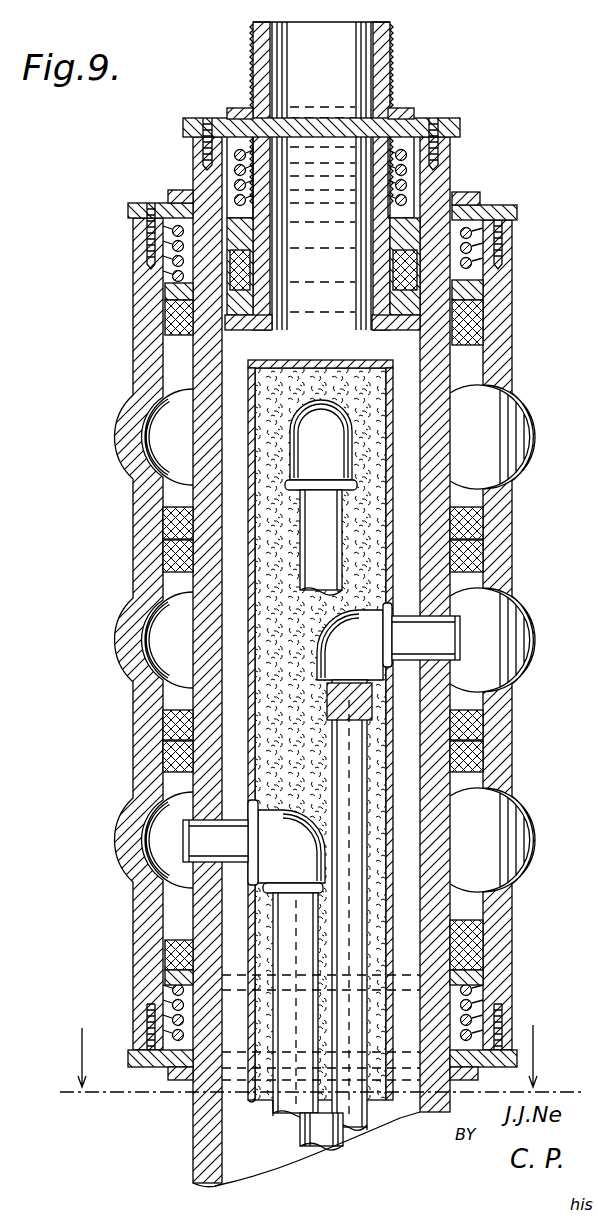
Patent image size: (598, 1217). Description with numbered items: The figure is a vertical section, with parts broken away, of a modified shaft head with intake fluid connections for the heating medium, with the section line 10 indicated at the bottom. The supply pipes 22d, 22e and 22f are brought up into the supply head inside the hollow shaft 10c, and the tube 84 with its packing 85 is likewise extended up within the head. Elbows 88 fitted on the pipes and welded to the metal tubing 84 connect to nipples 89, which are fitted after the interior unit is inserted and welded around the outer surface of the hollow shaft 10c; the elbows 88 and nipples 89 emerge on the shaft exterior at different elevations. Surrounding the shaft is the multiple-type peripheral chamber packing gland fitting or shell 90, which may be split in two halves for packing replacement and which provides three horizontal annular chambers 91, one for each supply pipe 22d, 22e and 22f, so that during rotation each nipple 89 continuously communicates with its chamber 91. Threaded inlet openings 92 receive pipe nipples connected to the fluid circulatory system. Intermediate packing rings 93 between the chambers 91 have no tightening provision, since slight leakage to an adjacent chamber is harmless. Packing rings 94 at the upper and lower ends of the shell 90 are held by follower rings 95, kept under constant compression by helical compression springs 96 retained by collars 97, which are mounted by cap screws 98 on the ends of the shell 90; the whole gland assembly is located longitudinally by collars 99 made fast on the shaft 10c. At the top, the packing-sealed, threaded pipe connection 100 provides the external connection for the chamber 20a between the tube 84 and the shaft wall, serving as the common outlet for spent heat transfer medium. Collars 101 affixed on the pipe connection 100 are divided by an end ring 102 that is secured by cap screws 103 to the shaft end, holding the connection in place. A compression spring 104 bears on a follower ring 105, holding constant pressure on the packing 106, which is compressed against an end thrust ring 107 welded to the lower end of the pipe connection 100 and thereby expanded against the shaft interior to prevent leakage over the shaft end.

The section line 10- 10 is at (322, 1075).
The hollow shaft 10c is at (210, 666).
The chamber 20a is at (410, 902).
The supply pipe 22d is at (296, 1120).
The supply pipe 22e is at (352, 1129).
The supply pipe 22f is at (324, 1149).
The tube 84 is at (250, 1101).
The packing 85 is at (282, 1108).
The elbow 88 is at (321, 765).
The nipple 89 is at (463, 637).
The shell 90 is at (135, 512).
The annular chamber 91 is at (145, 437).
The inlet opening 92 is at (528, 437).
The intermediate packing ring 93 is at (172, 558).
The packing ring 94 is at (478, 347).
The follower ring 95 is at (175, 290).
The helical compression spring 96 is at (174, 246).
The collar 97 is at (130, 211).
The cap screw 98 is at (150, 203).
The collar 99 is at (178, 190).
The pipe connection 100 is at (372, 78).
The collar 101 is at (397, 109).
The end ring 102 is at (462, 131).
The cap screw 103 is at (437, 121).
The compression spring 104 is at (408, 178).
The follower ring 105 is at (378, 233).
The packing 106 is at (398, 326).
The end thrust ring 107 is at (240, 329).